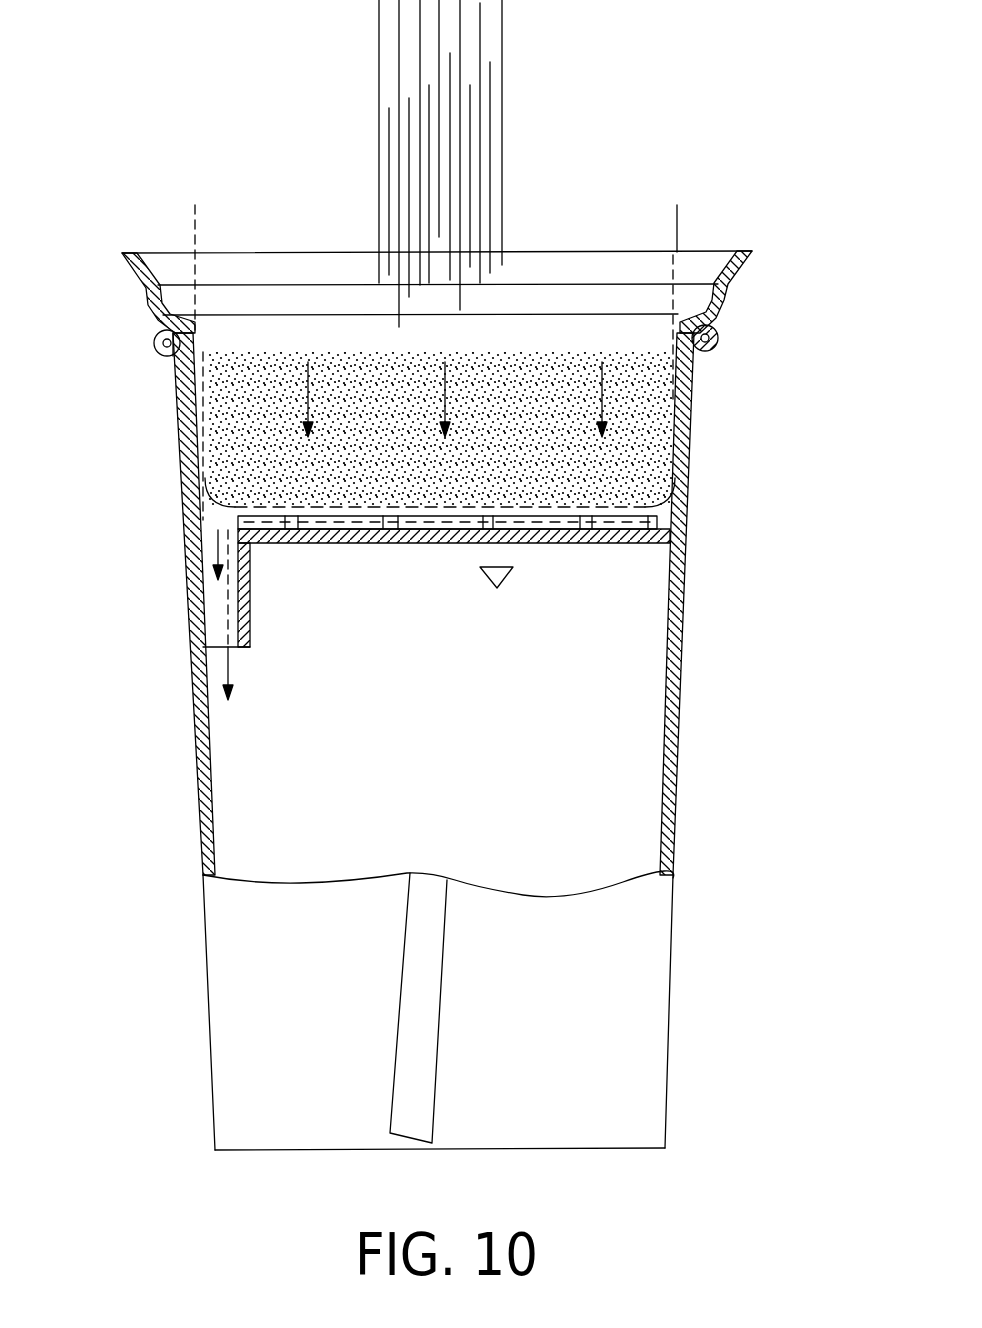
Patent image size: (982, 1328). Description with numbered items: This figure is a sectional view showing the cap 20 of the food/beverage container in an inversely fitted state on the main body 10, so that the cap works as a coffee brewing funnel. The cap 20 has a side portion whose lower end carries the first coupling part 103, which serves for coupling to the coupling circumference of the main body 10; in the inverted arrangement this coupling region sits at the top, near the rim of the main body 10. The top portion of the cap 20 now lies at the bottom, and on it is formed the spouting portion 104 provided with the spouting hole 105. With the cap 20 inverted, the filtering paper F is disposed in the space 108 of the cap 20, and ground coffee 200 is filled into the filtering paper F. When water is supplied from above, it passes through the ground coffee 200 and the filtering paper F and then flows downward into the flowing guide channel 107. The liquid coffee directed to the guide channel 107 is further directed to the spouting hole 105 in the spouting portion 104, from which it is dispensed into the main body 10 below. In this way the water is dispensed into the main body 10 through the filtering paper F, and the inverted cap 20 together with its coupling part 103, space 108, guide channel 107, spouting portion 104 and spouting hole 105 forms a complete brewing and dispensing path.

The main body 10 is at (676, 985).
The cap 20 is at (135, 238).
The first coupling part 103 is at (730, 299).
The spouting portion 104 is at (250, 633).
The spouting hole 105 is at (222, 648).
The flowing guide channel 107 is at (647, 542).
The space 108 is at (280, 298).
The ground coffee 200 is at (540, 378).
The filtering paper F is at (678, 233).